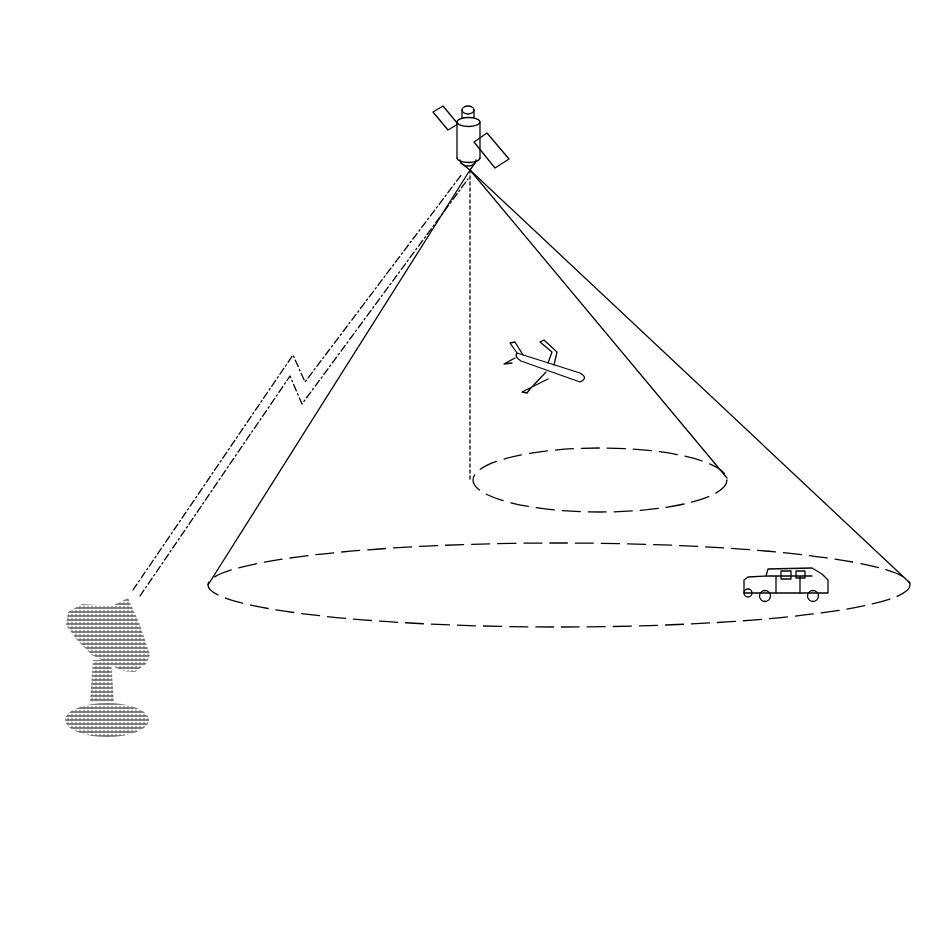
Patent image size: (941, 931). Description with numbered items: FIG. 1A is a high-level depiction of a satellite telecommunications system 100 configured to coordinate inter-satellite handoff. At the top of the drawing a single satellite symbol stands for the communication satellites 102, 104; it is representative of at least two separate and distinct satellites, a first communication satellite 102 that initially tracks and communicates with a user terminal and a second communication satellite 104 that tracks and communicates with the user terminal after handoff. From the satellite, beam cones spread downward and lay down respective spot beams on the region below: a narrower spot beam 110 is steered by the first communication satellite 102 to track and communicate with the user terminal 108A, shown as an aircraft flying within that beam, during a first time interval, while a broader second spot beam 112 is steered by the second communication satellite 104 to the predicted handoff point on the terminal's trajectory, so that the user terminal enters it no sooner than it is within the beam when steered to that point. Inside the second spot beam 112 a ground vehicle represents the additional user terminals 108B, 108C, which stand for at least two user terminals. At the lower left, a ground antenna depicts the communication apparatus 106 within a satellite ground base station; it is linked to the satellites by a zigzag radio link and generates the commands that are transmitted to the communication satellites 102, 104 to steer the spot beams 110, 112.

The system 100 is at (533, 68).
The first communication satellite 102 is at (509, 138).
The second communication satellite 104 is at (512, 148).
The communication apparatus 106 is at (83, 612).
The user terminal 108A is at (535, 345).
The additional user terminal 108B is at (742, 583).
The additional user terminal 108C is at (741, 578).
The spot beam 110 is at (582, 438).
The second spot beam 112 is at (353, 546).